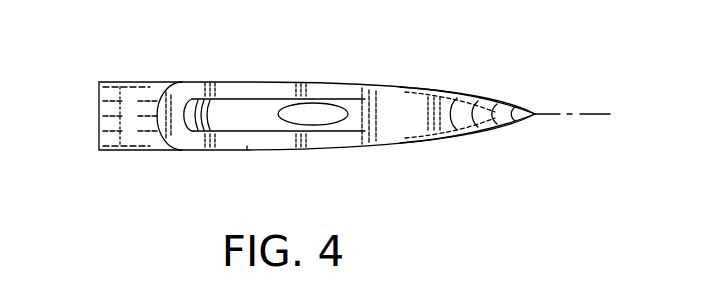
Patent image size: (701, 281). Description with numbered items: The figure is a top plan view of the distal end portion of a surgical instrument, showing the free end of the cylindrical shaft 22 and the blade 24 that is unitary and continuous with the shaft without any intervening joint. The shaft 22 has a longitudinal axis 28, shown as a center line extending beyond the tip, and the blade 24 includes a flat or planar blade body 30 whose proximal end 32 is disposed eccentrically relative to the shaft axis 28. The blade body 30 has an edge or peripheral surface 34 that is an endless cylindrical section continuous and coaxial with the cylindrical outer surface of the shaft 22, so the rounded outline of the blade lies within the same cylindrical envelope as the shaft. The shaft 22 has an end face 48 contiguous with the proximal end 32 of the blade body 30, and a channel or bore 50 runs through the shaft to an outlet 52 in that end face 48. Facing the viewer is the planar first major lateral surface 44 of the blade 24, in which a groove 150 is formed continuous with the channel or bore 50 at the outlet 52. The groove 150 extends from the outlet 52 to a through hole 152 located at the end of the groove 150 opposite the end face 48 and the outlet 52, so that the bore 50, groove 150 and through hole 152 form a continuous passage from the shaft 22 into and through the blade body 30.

The cylindrical shaft 22 is at (108, 148).
The channel or bore 50 is at (108, 82).
The end face 48 is at (188, 92).
The groove 150 is at (253, 98).
The outlet 52 is at (194, 125).
The through hole 152 is at (315, 104).
The major lateral surface 44 is at (399, 89).
The peripheral surface 34 is at (469, 95).
The longitudinal axis 28 is at (553, 115).
The proximal end 32 is at (247, 150).
The blade 24 is at (285, 155).
The blade body 30 is at (357, 151).